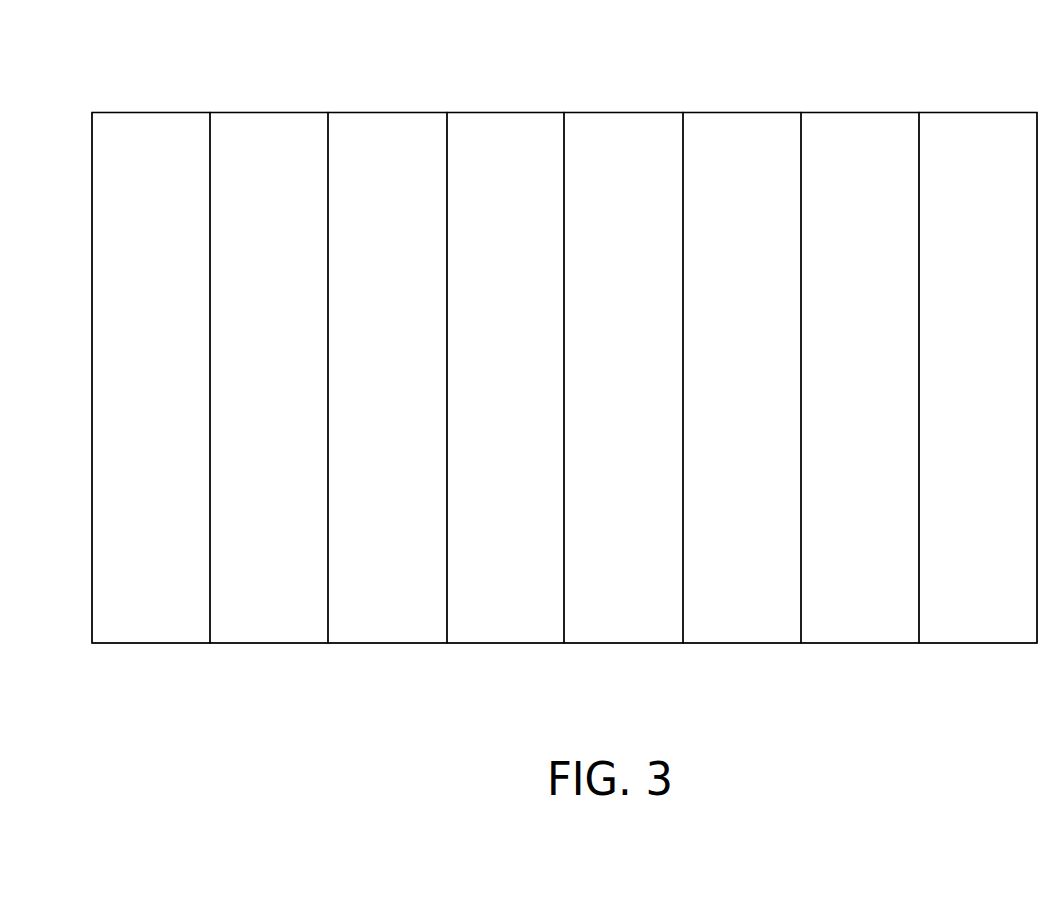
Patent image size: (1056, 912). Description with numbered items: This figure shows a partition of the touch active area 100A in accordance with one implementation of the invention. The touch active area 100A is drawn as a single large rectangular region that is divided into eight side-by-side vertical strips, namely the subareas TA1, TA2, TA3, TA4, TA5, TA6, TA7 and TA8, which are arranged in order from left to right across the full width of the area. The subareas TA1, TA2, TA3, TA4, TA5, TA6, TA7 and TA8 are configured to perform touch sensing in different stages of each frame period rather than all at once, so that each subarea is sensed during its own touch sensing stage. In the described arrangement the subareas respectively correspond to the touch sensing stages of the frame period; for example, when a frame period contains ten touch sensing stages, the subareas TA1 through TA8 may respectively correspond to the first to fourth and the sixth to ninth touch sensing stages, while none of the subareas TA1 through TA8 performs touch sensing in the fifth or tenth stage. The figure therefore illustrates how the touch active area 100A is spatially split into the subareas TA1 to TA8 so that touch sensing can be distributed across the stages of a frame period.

The touch active area 100A is at (105, 64).
The subarea TA1 is at (151, 407).
The subarea TA2 is at (269, 407).
The subarea TA3 is at (387, 407).
The subarea TA4 is at (505, 407).
The subarea TA5 is at (623, 407).
The subarea TA6 is at (742, 407).
The subarea TA7 is at (860, 407).
The subarea TA8 is at (978, 407).